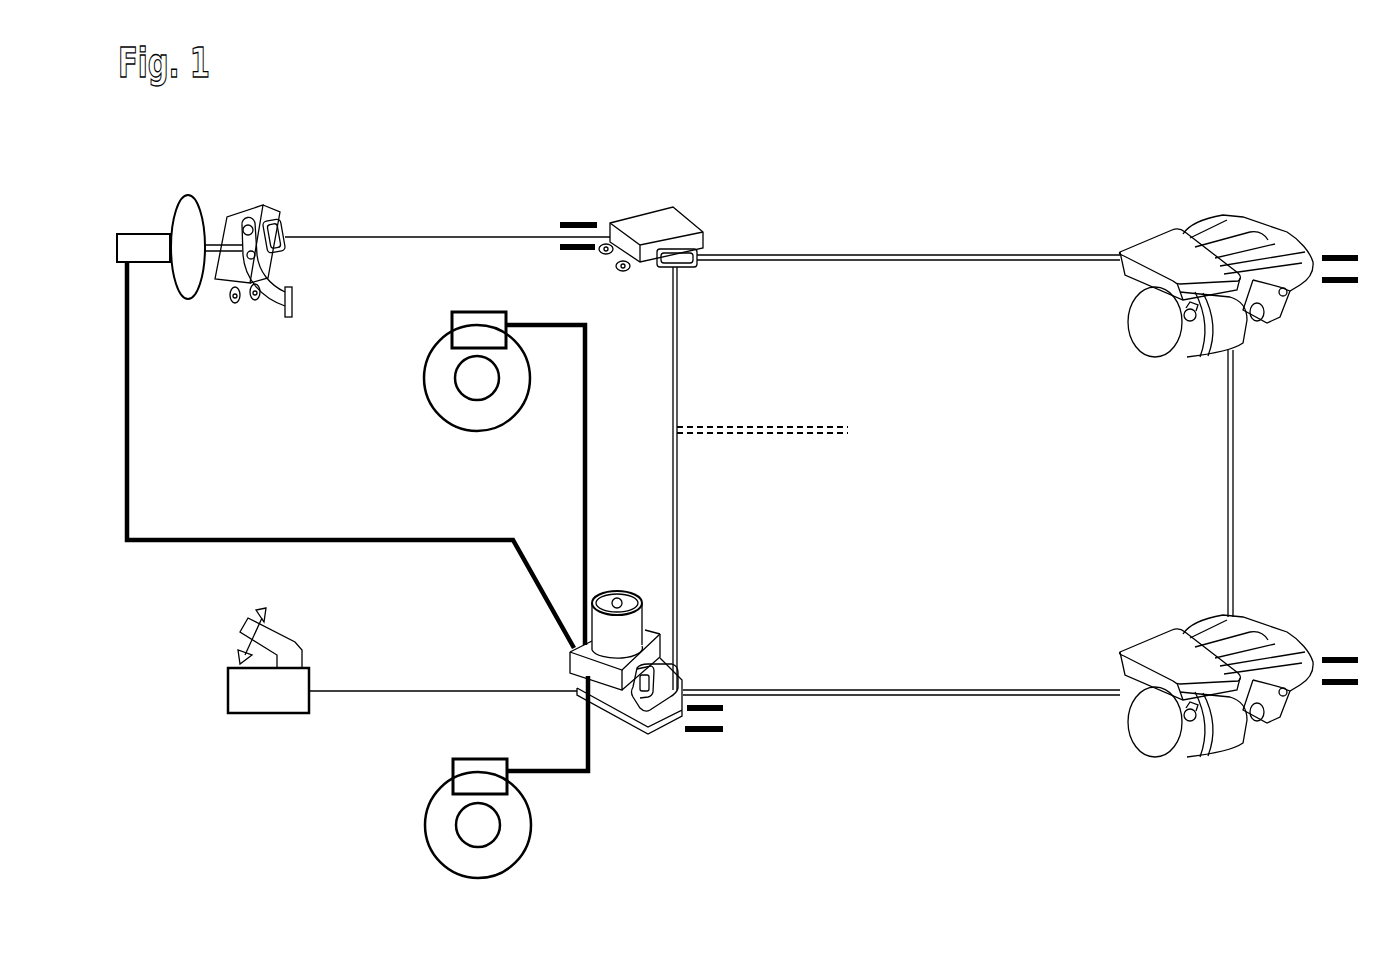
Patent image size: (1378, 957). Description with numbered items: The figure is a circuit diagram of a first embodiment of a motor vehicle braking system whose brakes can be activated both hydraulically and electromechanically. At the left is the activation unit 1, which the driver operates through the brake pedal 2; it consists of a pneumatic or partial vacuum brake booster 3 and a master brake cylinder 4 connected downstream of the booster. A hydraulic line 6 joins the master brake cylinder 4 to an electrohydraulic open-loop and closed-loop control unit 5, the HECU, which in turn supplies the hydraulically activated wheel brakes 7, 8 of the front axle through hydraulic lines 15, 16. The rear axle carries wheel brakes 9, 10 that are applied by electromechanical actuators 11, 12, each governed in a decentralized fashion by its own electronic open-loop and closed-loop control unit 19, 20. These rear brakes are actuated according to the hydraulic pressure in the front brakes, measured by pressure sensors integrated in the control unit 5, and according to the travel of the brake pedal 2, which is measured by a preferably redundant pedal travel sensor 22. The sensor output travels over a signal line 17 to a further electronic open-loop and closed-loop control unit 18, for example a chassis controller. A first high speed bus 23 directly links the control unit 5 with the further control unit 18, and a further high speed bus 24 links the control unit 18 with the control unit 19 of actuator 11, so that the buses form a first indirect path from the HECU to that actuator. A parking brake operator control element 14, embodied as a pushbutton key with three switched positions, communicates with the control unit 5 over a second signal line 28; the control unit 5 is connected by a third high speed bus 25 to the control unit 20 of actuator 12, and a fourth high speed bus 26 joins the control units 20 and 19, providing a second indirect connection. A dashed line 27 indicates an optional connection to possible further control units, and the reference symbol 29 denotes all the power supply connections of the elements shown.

The activation unit 1 is at (223, 198).
The brake pedal 2 is at (263, 312).
The partial vacuum brake booster 3 is at (190, 195).
The master brake cylinder 4 is at (143, 234).
The electrohydraulic open-loop and closed-loop control unit 5 is at (623, 592).
The hydraulic line 6 is at (313, 540).
The wheel brake 7 is at (452, 325).
The wheel brake 8 is at (453, 775).
The wheel brake 9 is at (1280, 236).
The wheel brake 10 is at (1285, 635).
The electromechanical actuator 11 is at (1140, 325).
The electromechanical actuator 12 is at (1155, 740).
The operator control element 14 is at (285, 613).
The hydraulic line 15 is at (584, 470).
The hydraulic line 16 is at (587, 785).
The signal line 17 is at (420, 237).
The further electronic open-loop and closed-loop control unit 18 is at (698, 227).
The electronic open-loop and closed-loop control unit 19 is at (1158, 250).
The electronic open-loop and closed-loop control unit 20 is at (1162, 650).
The pedal travel sensor 22 is at (288, 225).
The first high speed bus 23 is at (678, 372).
The further high speed bus 24 is at (933, 255).
The third high speed bus 25 is at (925, 689).
The fourth high speed bus 26 is at (1234, 425).
The dashed signal line 27 is at (823, 427).
The second signal line 28 is at (460, 691).
The power supply connections 29 is at (560, 225).